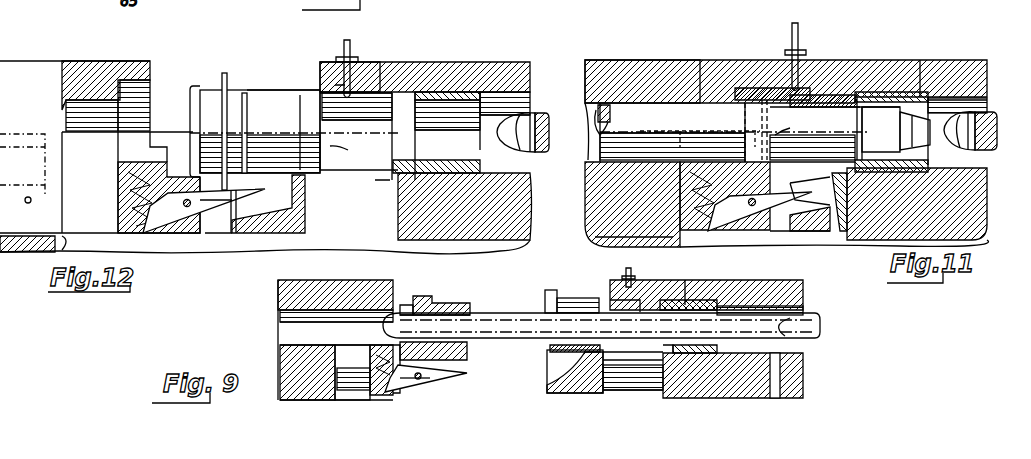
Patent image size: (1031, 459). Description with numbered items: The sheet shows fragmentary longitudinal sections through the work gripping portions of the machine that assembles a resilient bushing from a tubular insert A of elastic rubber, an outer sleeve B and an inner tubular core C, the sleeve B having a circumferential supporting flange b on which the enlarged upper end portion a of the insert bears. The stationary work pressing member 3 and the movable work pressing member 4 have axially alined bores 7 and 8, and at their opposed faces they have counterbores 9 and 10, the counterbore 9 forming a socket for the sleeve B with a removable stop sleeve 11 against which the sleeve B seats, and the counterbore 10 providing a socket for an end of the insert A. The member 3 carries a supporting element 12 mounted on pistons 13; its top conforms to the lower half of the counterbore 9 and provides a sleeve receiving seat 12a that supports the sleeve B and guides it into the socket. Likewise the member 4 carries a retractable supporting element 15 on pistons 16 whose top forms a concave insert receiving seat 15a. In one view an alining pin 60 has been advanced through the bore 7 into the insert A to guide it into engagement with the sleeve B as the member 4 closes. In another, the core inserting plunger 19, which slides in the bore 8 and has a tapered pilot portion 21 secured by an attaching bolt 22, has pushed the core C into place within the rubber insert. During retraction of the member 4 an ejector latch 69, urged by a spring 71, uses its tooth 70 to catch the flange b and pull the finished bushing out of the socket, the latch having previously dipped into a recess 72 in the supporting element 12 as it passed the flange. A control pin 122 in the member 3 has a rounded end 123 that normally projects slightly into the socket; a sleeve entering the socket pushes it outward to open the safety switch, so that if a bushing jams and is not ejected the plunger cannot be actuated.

In FIG. 12, the stationary work pressing member 3 is at (423, 62).
In FIG. 11, the stationary work pressing member 3 is at (960, 60).
In FIG. 9, the stationary work pressing member 3 is at (805, 290).
In FIG. 12, the movable work pressing member 4 is at (12, 61).
In FIG. 11, the movable work pressing member 4 is at (633, 60).
In FIG. 9, the movable work pressing member 4 is at (285, 295).
In FIG. 12, the bore 7 is at (500, 164).
In FIG. 11, the bore 7 is at (975, 162).
In FIG. 9, the bore 7 is at (805, 350).
In FIG. 12, the bore 8 is at (66, 118).
In FIG. 11, the bore 8 is at (690, 105).
In FIG. 9, the bore 8 is at (285, 340).
In FIG. 12, the counterbore 9 is at (380, 62).
In FIG. 11, the counterbore 9 is at (867, 75).
In FIG. 9, the counterbore 9 is at (655, 315).
In FIG. 12, the counterbore 10 is at (140, 97).
In FIG. 11, the counterbore 10 is at (745, 110).
In FIG. 12, the removable stop sleeve 11 is at (470, 95).
In FIG. 11, the removable stop sleeve 11 is at (926, 62).
In FIG. 9, the removable stop sleeve 11 is at (686, 290).
In FIG. 12, the supporting element 12 is at (292, 230).
In FIG. 11, the supporting element 12 is at (835, 230).
In FIG. 9, the supporting element 12 is at (590, 395).
In FIG. 9, the sleeve receiving seat 12a is at (560, 352).
In FIG. 12, the pistons 13 is at (370, 208).
In FIG. 11, the pistons 13 is at (891, 166).
In FIG. 9, the pistons 13 is at (640, 390).
In FIG. 12, the retractable supporting element 15 is at (112, 166).
In FIG. 11, the retractable supporting element 15 is at (685, 212).
In FIG. 9, the retractable supporting element 15 is at (416, 393).
In FIG. 9, the concave insert receiving seat 15a is at (467, 350).
In FIG. 12, the pistons 16 is at (27, 245).
In FIG. 9, the pistons 16 is at (355, 378).
In FIG. 11, the core inserting plunger 19 is at (635, 147).
In FIG. 11, the tapered pilot portion 21 is at (905, 150).
In FIG. 11, the attaching bolt 22 is at (930, 138).
In FIG. 12, the alining pin 60 is at (534, 122).
In FIG. 11, the alining pin 60 is at (985, 110).
In FIG. 9, the alining pin 60 is at (520, 320).
In FIG. 12, the ejector latch 69 is at (182, 218).
In FIG. 11, the ejector latch 69 is at (740, 215).
In FIG. 9, the ejector latch 69 is at (447, 385).
In FIG. 12, the tooth 70 is at (233, 196).
In FIG. 11, the tooth 70 is at (847, 190).
In FIG. 9, the tooth 70 is at (450, 373).
In FIG. 12, the spring 71 is at (120, 233).
In FIG. 11, the spring 71 is at (690, 192).
In FIG. 9, the spring 71 is at (372, 388).
In FIG. 12, the recess 72 is at (268, 200).
In FIG. 11, the recess 72 is at (785, 215).
In FIG. 9, the recess 72 is at (570, 382).
In FIG. 12, the control pin 122 is at (340, 70).
In FIG. 11, the control pin 122 is at (815, 60).
In FIG. 9, the control pin 122 is at (628, 277).
In FIG. 12, the rounded end 123 is at (354, 123).
In FIG. 11, the rounded end 123 is at (815, 133).
In FIG. 12, the tubular insert A is at (196, 110).
In FIG. 11, the tubular insert A is at (727, 78).
In FIG. 9, the tubular insert A is at (458, 303).
In FIG. 12, the outer sleeve B is at (262, 90).
In FIG. 11, the outer sleeve B is at (835, 62).
In FIG. 9, the outer sleeve B is at (587, 298).
In FIG. 12, the inner tubular core C is at (346, 154).
In FIG. 11, the inner tubular core C is at (790, 127).
In FIG. 9, the upper end portion a is at (423, 298).
In FIG. 12, the circumferential supporting flange b is at (224, 73).
In FIG. 9, the circumferential supporting flange b is at (552, 290).